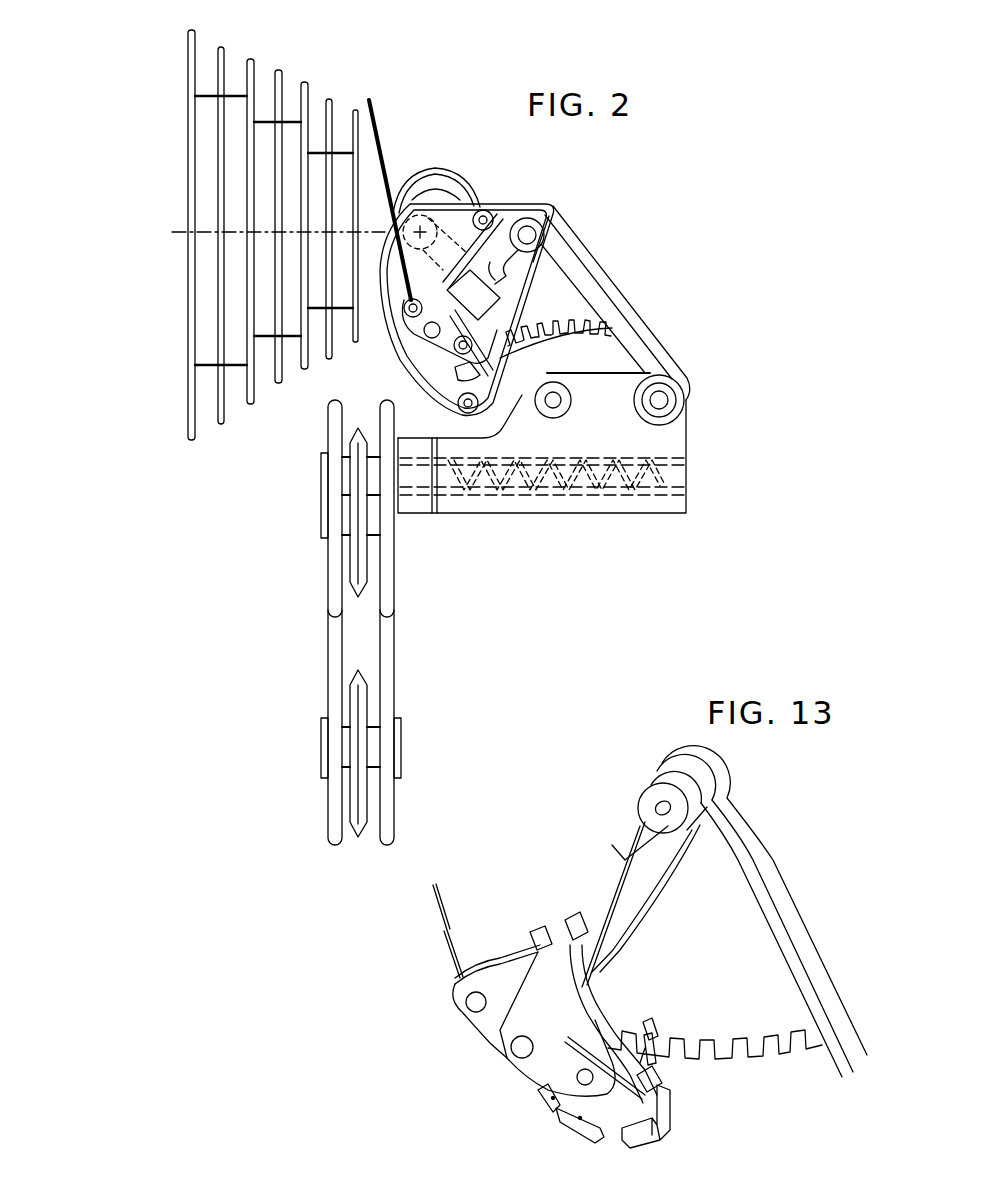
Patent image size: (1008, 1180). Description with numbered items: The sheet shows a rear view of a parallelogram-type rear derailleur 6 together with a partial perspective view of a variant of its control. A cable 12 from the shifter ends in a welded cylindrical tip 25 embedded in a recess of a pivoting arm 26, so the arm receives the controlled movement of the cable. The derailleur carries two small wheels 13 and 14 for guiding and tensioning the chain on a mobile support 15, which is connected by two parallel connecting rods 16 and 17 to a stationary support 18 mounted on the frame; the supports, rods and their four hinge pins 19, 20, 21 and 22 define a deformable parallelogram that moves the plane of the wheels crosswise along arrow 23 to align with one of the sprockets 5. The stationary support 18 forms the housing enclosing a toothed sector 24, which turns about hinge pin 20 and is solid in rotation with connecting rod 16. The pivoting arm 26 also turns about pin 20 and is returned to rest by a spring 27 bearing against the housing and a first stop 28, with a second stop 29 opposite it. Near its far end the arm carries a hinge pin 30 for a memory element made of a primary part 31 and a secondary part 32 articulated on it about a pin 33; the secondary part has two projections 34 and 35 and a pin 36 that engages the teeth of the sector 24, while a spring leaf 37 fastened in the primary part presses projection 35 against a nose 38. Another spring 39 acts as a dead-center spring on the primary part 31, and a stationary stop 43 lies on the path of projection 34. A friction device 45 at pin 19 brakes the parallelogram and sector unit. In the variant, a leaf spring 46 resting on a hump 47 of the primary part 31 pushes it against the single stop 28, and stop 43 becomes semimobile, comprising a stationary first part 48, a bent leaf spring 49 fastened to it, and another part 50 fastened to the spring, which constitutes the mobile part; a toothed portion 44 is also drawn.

In FIG. 2, the sprockets 5 is at (304, 82).
In FIG. 2, the rear derailleur 6 is at (708, 374).
In FIG. 2, the cable 12 is at (380, 128).
In FIG. 13, the cable 12 is at (443, 927).
In FIG. 2, the small wheel 13 is at (357, 563).
In FIG. 2, the small wheel 14 is at (358, 782).
In FIG. 2, the mobile support 15 is at (540, 505).
In FIG. 2, the connecting rod 16 is at (637, 343).
In FIG. 2, the connecting rod 17 is at (530, 370).
In FIG. 2, the stationary support 18 is at (451, 174).
In FIG. 2, the hinge pin 19 is at (672, 402).
In FIG. 2, the hinge pin 20 is at (548, 214).
In FIG. 13, the hinge pin 20 is at (660, 806).
In FIG. 2, the hinge pin 21 is at (563, 410).
In FIG. 2, the hinge pin 22 is at (410, 224).
In FIG. 2, the arrow 23 is at (312, 642).
In FIG. 2, the toothed sector 24 is at (580, 307).
In FIG. 13, the toothed sector 24 is at (727, 908).
In FIG. 2, the cylindrical tip 25 is at (409, 315).
In FIG. 13, the cylindrical tip 25 is at (464, 1001).
In FIG. 2, the pivoting arm 26 is at (548, 262).
In FIG. 13, the pivoting arm 26 is at (620, 903).
In FIG. 2, the spring 27 is at (484, 209).
In FIG. 13, the first stop 28 is at (550, 917).
In FIG. 2, the second stop 29 is at (500, 310).
In FIG. 2, the hinge pin 30 is at (427, 337).
In FIG. 13, the hinge pin 30 is at (511, 1050).
In FIG. 2, the primary part 31 is at (448, 293).
In FIG. 13, the primary part 31 is at (557, 990).
In FIG. 2, the secondary part 32 is at (462, 413).
In FIG. 13, the secondary part 32 is at (671, 1097).
In FIG. 2, the pin 33 is at (455, 349).
In FIG. 13, the pin 33 is at (577, 1072).
In FIG. 13, the projection 34 is at (662, 1132).
In FIG. 13, the projection 35 is at (650, 1074).
In FIG. 13, the pin 36 is at (645, 1032).
In FIG. 13, the spring leaf 37 is at (568, 1037).
In FIG. 13, the nose 38 is at (657, 1040).
In FIG. 2, the spring 39 is at (521, 218).
In FIG. 2, the stationary stop 43 is at (448, 375).
In FIG. 13, the stationary stop 43 is at (526, 1127).
In FIG. 2, the toothed sector 44 is at (583, 334).
In FIG. 13, the toothed sector 44 is at (715, 1048).
In FIG. 2, the friction device 45 is at (670, 430).
In FIG. 13, the leaf spring 46 is at (592, 872).
In FIG. 13, the hump 47 is at (530, 937).
In FIG. 13, the first part 48 is at (575, 1128).
In FIG. 13, the bent leaf spring 49 is at (540, 1090).
In FIG. 13, the other part 50 is at (537, 1103).